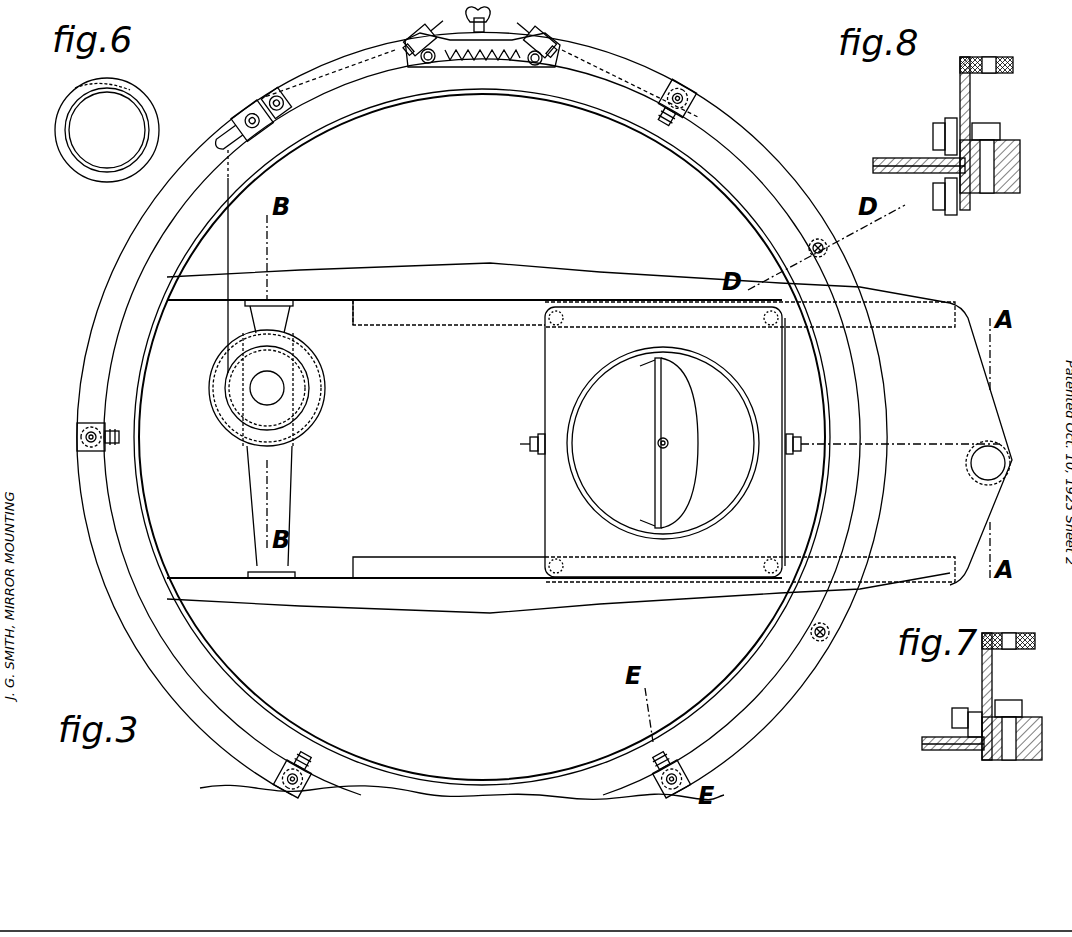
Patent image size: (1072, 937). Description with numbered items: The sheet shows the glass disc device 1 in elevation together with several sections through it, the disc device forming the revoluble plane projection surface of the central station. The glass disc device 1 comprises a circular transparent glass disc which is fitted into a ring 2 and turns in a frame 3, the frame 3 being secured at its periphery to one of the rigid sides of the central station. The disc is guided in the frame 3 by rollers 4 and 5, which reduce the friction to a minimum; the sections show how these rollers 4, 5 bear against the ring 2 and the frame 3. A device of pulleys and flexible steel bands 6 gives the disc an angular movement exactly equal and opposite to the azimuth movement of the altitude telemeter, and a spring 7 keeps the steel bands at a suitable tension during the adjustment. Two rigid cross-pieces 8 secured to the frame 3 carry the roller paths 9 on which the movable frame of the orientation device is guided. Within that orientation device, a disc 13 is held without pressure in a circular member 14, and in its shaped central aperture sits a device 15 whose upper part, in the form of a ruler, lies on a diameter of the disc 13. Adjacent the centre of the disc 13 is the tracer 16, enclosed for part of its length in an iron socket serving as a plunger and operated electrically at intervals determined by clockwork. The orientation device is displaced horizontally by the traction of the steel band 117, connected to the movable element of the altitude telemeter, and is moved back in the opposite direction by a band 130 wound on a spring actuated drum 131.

In FIG. 3, the glass disc device 1 is at (525, 186).
In FIG. 8, the glass disc device 1 is at (919, 153).
In FIG. 7, the glass disc device 1 is at (953, 731).
In FIG. 3, the ring 2 is at (697, 143).
In FIG. 8, the ring 2 is at (919, 184).
In FIG. 7, the ring 2 is at (953, 764).
In FIG. 3, the frame 3 is at (752, 157).
In FIG. 8, the frame 3 is at (968, 105).
In FIG. 3, the roller 4 is at (75, 444).
In FIG. 8, the roller 4 is at (990, 190).
In FIG. 7, the roller 4 is at (995, 755).
In FIG. 3, the roller 5 is at (660, 125).
In FIG. 8, the roller 5 is at (950, 125).
In FIG. 7, the roller 5 is at (970, 708).
In FIG. 3, the steel band 6 is at (440, 20).
In FIG. 3, the spring 7 is at (478, 60).
In FIG. 3, the rigid cross-piece 8 is at (398, 282).
In FIG. 3, the roller path 9 is at (405, 318).
In FIG. 3, the disc 13 is at (598, 480).
In FIG. 3, the circular member 14 is at (580, 396).
In FIG. 3, the ruler device 15 is at (700, 490).
In FIG. 3, the tracer 16 is at (672, 432).
In FIG. 3, the steel band 117 is at (300, 76).
In FIG. 3, the band 130 is at (812, 448).
In FIG. 6, the band 130 is at (95, 98).
In FIG. 3, the spring actuated drum 131 is at (995, 462).